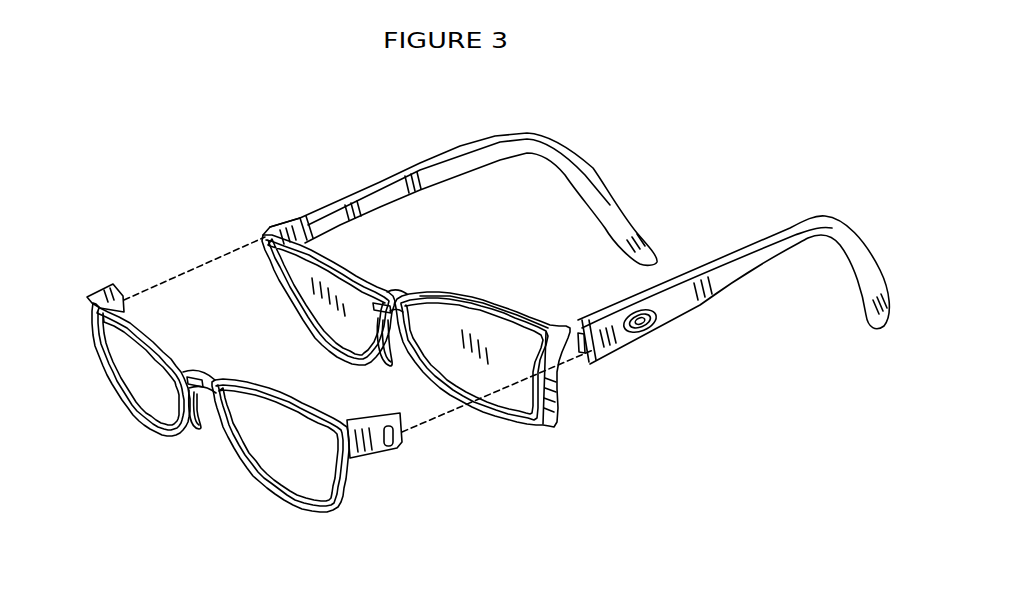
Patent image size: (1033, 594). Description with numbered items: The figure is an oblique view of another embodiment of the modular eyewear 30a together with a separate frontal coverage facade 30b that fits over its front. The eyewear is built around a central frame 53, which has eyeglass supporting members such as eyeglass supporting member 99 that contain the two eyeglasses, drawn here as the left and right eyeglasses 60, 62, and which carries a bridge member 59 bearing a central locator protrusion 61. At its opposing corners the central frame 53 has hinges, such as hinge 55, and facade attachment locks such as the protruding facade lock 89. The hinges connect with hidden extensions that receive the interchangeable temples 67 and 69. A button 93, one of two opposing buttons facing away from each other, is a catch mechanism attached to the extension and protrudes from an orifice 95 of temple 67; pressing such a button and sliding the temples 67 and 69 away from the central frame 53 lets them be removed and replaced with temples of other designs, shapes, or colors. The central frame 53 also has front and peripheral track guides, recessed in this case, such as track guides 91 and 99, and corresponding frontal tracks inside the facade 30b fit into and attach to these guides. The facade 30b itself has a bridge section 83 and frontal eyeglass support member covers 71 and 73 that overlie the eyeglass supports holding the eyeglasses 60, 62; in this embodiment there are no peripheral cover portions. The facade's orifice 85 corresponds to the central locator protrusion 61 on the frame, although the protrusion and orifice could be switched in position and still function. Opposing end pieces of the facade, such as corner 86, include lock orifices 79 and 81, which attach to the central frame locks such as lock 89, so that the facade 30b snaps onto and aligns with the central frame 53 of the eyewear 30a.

The modular eyewear 30a is at (612, 175).
The frontal coverage facade 30b is at (115, 419).
The central frame 53 is at (457, 280).
The hinge 55 is at (300, 220).
The bridge member 59 is at (400, 298).
The left lens 60 is at (325, 325).
The central locator protrusion 61 is at (388, 302).
The right lens 62 is at (447, 355).
The temple 67 is at (683, 297).
The temple 69 is at (423, 167).
The frontal eyeglass support member cover 71 is at (267, 480).
The frontal eyeglass support member cover 73 is at (150, 427).
The lock orifice 79 is at (110, 288).
The lock orifice 81 is at (393, 440).
The bridge section 83 is at (197, 375).
The orifice 85 is at (187, 380).
The corner 86 is at (380, 453).
The facade lock 89 is at (593, 352).
The track guide 91 is at (497, 303).
The button 93 is at (653, 325).
The orifice 95 is at (640, 338).
The eyeglass supporting member 99 is at (557, 403).